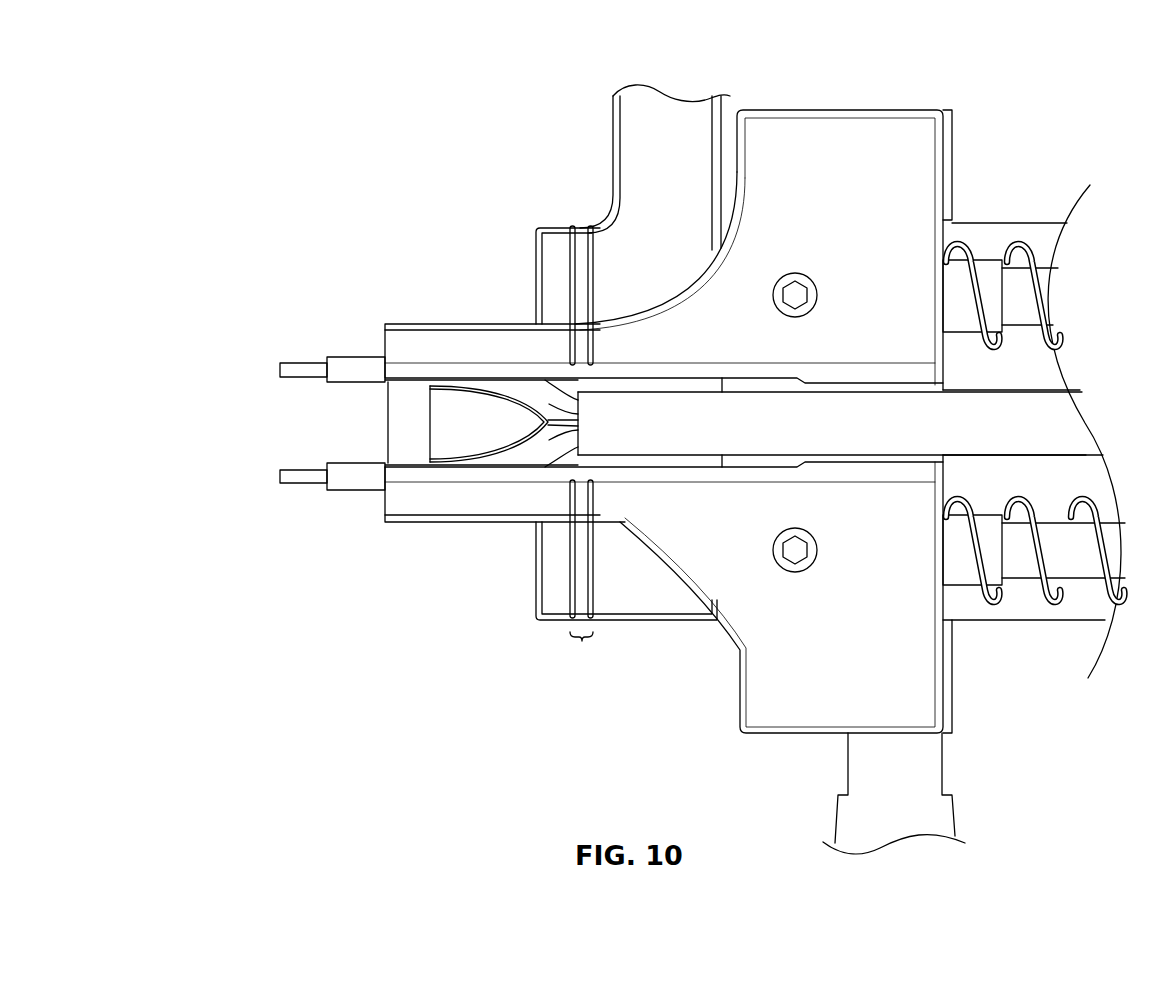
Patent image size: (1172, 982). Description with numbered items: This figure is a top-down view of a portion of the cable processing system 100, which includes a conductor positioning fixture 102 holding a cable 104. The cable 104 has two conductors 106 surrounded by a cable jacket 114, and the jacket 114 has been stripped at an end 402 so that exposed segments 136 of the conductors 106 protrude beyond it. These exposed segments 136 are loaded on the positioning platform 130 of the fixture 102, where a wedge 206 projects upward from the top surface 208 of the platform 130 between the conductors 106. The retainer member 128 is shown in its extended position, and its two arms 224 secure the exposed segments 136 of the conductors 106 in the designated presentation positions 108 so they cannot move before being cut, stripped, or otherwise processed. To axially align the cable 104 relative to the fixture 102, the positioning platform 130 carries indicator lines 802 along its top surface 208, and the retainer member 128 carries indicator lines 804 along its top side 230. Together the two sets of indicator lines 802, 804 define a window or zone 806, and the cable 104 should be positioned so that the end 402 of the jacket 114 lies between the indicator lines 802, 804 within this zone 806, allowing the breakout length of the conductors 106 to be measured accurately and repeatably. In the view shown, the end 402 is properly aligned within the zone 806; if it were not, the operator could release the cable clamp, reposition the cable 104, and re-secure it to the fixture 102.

The cable processing system 100 is at (248, 143).
The conductor positioning fixture 102 is at (704, 706).
The cable 104 is at (858, 417).
The conductors 106 is at (352, 367).
The presentation positions 108 is at (268, 368).
The cable jacket 114 is at (682, 417).
The retainer member 128 is at (835, 178).
The positioning platform 130 is at (632, 227).
The exposed segments 136 is at (523, 455).
The wedge 206 is at (470, 410).
The top surface 208 is at (550, 574).
The arms 224 is at (476, 344).
The top side 230 is at (707, 316).
The end of the jacket 402 is at (540, 400).
The indicator lines 802 is at (600, 240).
The indicator lines 804 is at (565, 350).
The zone 806 is at (588, 652).